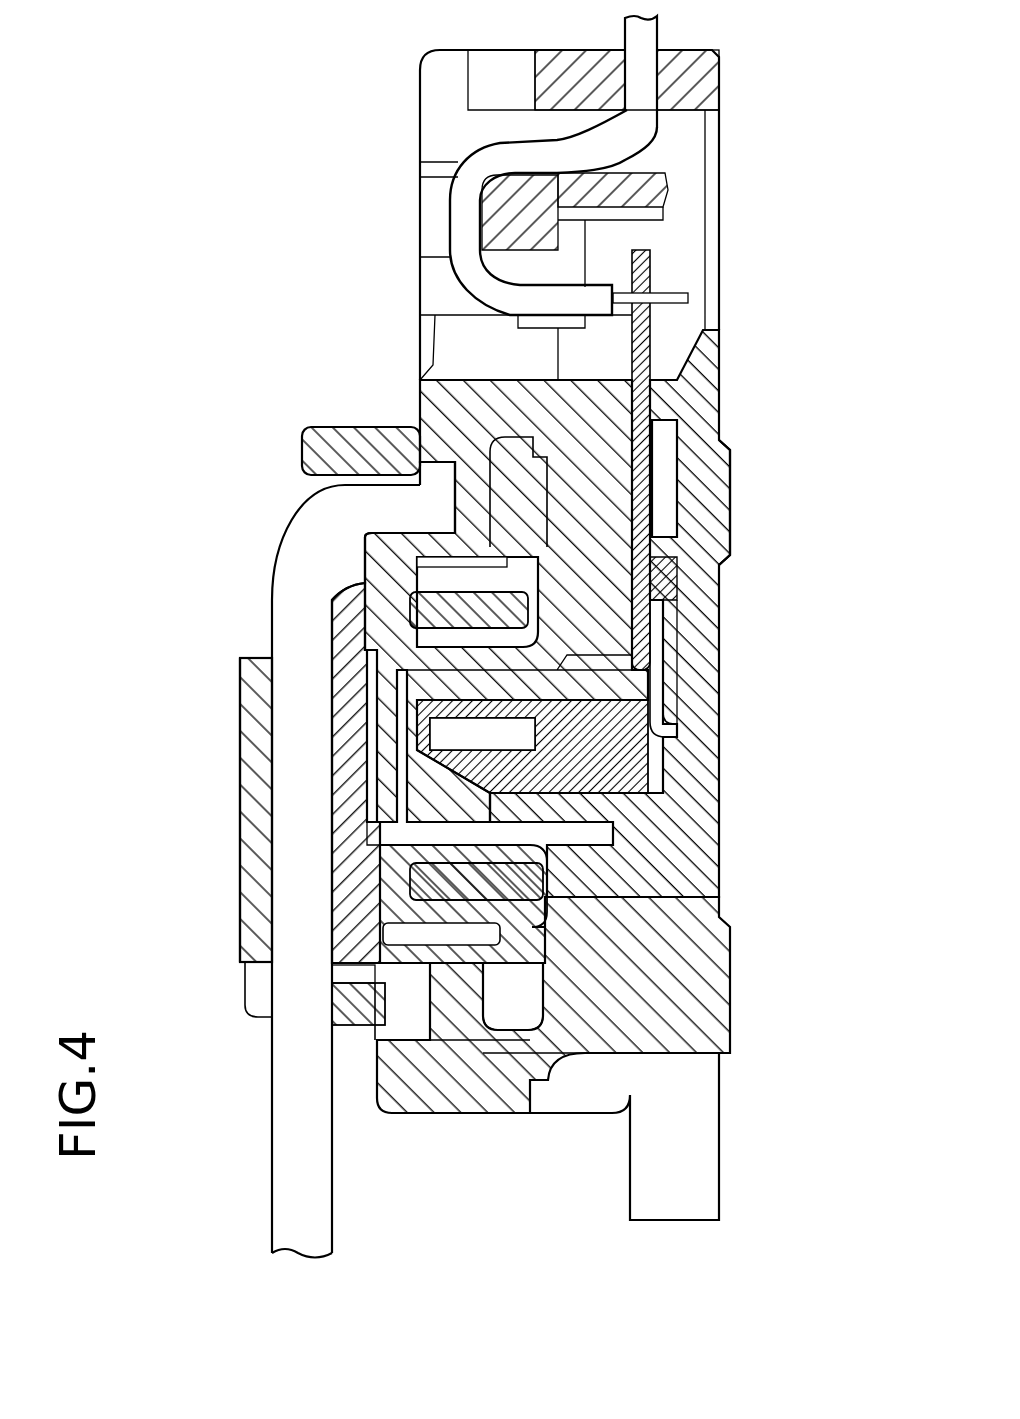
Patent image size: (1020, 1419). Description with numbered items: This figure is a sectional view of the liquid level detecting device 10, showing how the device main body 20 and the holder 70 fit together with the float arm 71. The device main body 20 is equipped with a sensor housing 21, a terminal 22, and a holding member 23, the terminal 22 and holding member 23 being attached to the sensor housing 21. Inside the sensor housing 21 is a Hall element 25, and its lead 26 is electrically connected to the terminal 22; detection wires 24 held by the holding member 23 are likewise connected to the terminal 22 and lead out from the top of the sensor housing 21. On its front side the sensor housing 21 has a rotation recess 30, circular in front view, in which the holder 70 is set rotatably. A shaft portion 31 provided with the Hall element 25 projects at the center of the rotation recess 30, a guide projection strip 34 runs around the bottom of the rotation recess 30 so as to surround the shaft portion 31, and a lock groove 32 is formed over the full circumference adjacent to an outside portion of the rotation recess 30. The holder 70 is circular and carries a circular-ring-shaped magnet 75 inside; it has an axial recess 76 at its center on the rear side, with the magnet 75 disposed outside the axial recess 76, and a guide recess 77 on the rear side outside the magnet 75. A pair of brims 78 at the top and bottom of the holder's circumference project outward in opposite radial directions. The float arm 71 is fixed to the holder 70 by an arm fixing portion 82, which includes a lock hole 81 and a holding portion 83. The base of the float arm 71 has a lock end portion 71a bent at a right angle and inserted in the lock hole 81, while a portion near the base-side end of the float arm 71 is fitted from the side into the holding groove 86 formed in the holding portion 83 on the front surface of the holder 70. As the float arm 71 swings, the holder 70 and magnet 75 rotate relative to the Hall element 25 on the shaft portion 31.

The liquid level detecting device 10 is at (243, 92).
The device main body 20 is at (719, 352).
The sensor housing 21 is at (721, 642).
The terminal 22 is at (657, 463).
The holding member 23 is at (502, 216).
The detection wires 24 is at (657, 35).
The Hall element 25 is at (450, 722).
The lead 26 is at (683, 688).
The rotation recess 30 is at (335, 1010).
The shaft portion 31 is at (413, 640).
The lock groove 32 is at (547, 462).
The guide projection strip 34 is at (430, 962).
The holder 70 is at (326, 424).
The float arm 71 is at (270, 1075).
The lock end portion 71a is at (413, 502).
The magnet 75 is at (420, 872).
The axial recess 76 is at (405, 805).
The guide recess 77 is at (728, 547).
The brims 78 is at (510, 470).
The lock hole 81 is at (410, 483).
The arm fixing portion 82 is at (239, 831).
The holding portion 83 is at (240, 760).
The holding groove 86 is at (250, 762).